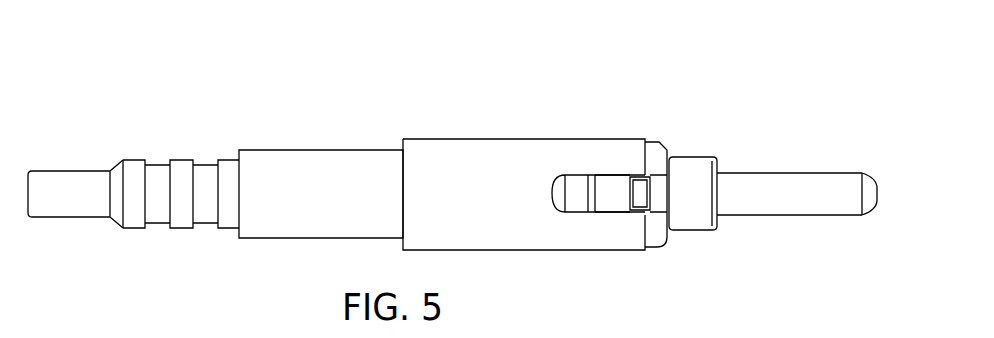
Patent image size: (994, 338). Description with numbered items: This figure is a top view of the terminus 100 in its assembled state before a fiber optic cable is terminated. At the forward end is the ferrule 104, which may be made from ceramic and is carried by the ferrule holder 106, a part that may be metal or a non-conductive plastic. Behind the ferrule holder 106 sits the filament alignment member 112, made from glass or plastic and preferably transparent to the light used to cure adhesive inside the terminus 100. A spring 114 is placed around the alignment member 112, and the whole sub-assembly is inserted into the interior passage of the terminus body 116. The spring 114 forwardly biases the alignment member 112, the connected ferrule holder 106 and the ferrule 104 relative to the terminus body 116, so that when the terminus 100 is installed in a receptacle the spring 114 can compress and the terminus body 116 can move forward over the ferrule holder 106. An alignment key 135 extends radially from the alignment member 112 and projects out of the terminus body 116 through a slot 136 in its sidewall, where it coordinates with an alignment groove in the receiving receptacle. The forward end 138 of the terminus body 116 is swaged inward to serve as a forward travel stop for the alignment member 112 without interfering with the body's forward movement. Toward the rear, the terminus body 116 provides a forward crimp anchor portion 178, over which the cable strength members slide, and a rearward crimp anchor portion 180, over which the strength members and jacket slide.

The terminus 100 is at (542, 98).
The ferrule 104 is at (795, 185).
The ferrule holder 106 is at (692, 175).
The filament alignment member 112 is at (612, 198).
The spring 114 is at (578, 192).
The terminus body 116 is at (333, 180).
The alignment key 135 is at (637, 193).
The slot 136 is at (600, 198).
The forward end 138 is at (658, 230).
The forward crimp anchor portion 178 is at (160, 178).
The rearward crimp anchor portion 180 is at (68, 178).